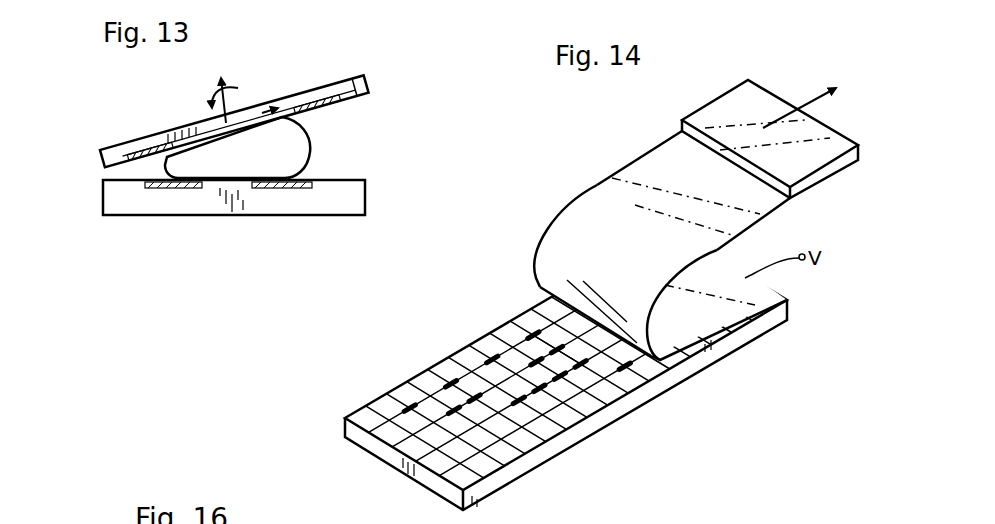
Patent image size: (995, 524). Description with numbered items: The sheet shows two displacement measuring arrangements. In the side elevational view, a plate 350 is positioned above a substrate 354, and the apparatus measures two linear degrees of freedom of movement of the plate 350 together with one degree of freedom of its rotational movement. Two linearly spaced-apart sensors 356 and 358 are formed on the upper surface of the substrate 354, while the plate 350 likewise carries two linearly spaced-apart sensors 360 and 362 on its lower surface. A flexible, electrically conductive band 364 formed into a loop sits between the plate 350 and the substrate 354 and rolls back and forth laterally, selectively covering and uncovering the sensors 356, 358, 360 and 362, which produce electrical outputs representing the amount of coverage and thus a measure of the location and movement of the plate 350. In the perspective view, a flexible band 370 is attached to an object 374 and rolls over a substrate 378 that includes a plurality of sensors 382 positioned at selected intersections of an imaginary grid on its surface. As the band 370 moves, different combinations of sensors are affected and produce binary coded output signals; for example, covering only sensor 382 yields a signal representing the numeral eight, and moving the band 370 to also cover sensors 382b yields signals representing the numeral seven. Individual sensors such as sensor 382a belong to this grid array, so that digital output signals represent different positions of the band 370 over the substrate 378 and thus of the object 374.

In FIG. 13, the plate 350 is at (368, 78).
In FIG. 13, the substrate 354 is at (352, 200).
In FIG. 13, the sensor 356 is at (173, 188).
In FIG. 13, the sensor 358 is at (290, 188).
In FIG. 13, the sensor 360 is at (137, 157).
In FIG. 13, the sensor 362 is at (331, 109).
In FIG. 13, the flexible, electrically conductive band 364 is at (307, 143).
In FIG. 14, the flexible band 370 is at (597, 185).
In FIG. 14, the object 374 is at (710, 104).
In FIG. 14, the substrate 378 is at (612, 413).
In FIG. 14, the sensors 382 is at (519, 406).
In FIG. 14, the strip contact 382a is at (658, 362).
In FIG. 14, the sensors 382b is at (530, 337).